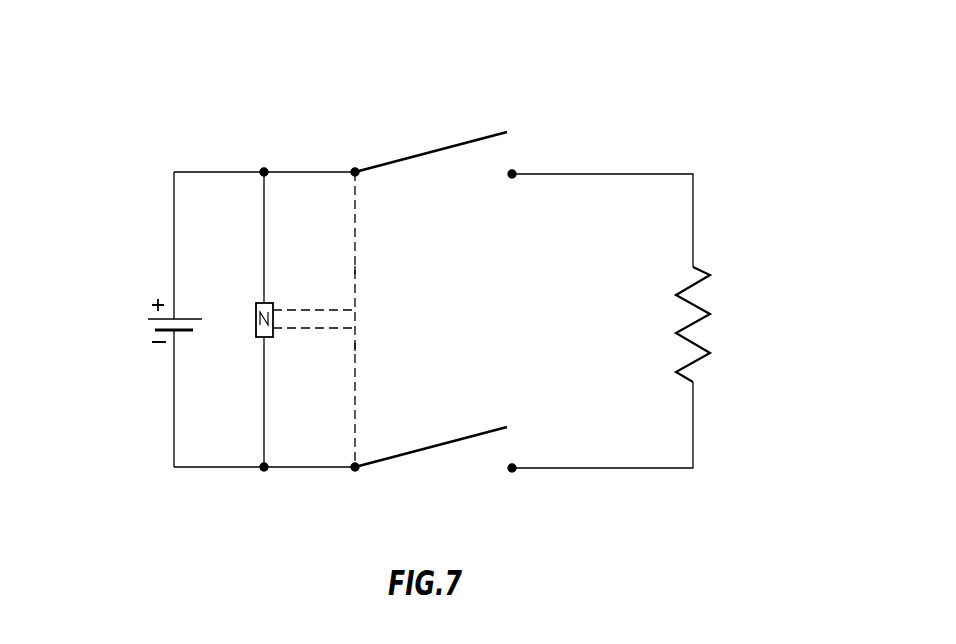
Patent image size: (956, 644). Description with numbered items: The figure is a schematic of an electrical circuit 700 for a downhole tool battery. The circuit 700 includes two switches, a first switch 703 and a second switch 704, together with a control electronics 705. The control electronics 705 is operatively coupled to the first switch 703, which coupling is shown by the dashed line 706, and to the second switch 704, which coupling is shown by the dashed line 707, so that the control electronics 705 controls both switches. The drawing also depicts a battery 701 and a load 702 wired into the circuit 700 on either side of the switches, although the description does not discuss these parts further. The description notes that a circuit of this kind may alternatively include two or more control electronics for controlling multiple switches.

The circuit 700 is at (758, 136).
The power source (battery) 701 is at (148, 320).
The load (resistor) 702 is at (700, 305).
The first switch 703 is at (460, 145).
The second switch 704 is at (462, 442).
The control electronics 705 is at (268, 303).
The dashed line 706 is at (356, 270).
The dashed line 707 is at (356, 347).